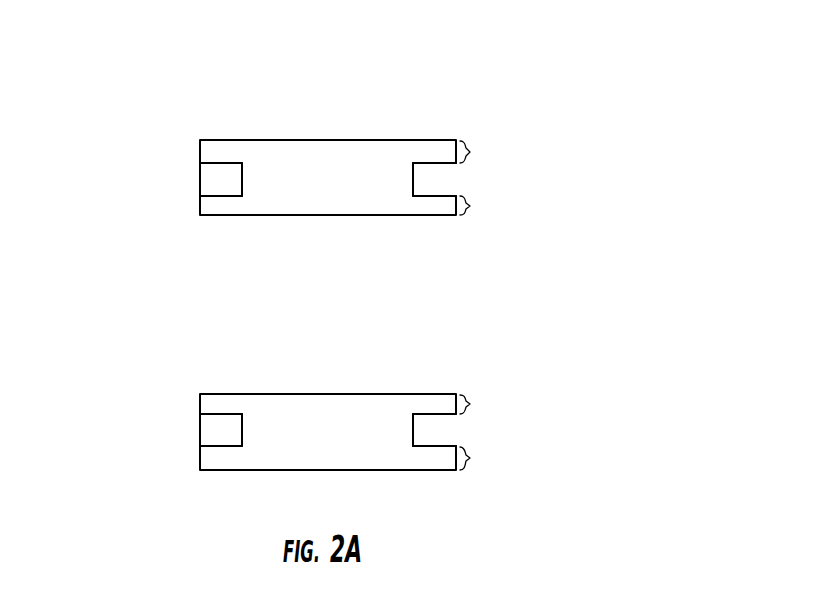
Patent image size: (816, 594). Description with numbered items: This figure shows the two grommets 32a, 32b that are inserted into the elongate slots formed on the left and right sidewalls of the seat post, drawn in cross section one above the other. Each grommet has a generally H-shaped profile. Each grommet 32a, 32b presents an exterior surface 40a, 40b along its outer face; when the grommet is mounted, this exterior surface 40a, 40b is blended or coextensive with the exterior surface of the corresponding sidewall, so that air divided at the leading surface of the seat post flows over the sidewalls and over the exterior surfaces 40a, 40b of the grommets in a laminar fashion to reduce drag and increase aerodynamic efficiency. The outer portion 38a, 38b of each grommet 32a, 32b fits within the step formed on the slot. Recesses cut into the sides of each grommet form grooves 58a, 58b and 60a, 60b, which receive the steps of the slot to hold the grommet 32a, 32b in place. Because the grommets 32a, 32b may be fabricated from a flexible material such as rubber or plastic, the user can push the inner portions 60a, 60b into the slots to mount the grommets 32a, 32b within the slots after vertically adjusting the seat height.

The grommet 32a is at (379, 140).
The grommet 32b is at (358, 462).
The exterior surface 40a is at (313, 140).
The exterior surface 40b is at (313, 470).
The outer portion 38a is at (470, 458).
The outer portion 38b is at (470, 152).
The groove 58a is at (435, 178).
The groove 58b is at (437, 432).
The inner portion 60a is at (470, 206).
The inner portion 60b is at (470, 404).